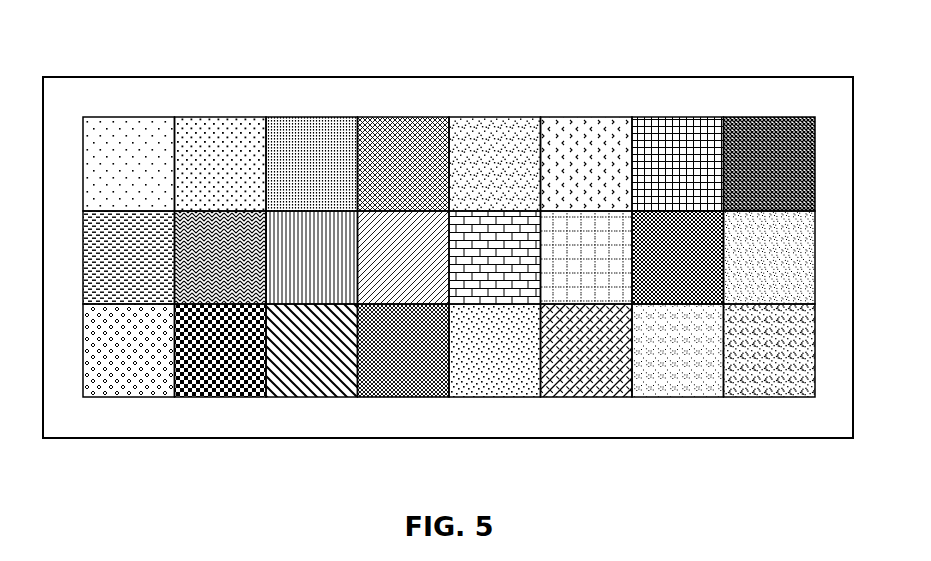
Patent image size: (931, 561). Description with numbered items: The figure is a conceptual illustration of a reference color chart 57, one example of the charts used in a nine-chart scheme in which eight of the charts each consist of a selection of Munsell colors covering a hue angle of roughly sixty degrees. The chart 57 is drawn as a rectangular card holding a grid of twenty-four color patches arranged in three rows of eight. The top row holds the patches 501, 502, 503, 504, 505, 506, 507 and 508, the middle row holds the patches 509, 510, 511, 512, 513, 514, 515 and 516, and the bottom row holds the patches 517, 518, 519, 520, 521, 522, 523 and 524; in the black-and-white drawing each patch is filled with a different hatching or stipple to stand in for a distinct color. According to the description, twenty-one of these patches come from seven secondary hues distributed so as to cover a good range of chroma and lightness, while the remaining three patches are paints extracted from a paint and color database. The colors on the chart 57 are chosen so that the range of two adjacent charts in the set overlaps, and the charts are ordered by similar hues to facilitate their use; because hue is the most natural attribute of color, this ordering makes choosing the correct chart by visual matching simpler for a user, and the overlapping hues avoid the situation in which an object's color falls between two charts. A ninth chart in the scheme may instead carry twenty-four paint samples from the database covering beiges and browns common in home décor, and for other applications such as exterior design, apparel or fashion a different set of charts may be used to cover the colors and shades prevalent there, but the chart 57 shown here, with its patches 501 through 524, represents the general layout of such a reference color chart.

The reference color chart 57 is at (203, 77).
The patch 501 is at (150, 176).
The patch 502 is at (199, 176).
The patch 503 is at (333, 176).
The patch 504 is at (382, 176).
The patch 505 is at (516, 176).
The patch 506 is at (565, 176).
The patch 507 is at (699, 176).
The patch 508 is at (748, 176).
The patch 509 is at (150, 269).
The patch 510 is at (199, 269).
The patch 511 is at (333, 269).
The patch 512 is at (382, 269).
The patch 513 is at (516, 269).
The patch 514 is at (565, 269).
The patch 515 is at (699, 269).
The patch 516 is at (748, 269).
The patch 517 is at (150, 362).
The patch 518 is at (199, 362).
The patch 519 is at (333, 362).
The patch 520 is at (382, 362).
The patch 521 is at (516, 362).
The patch 522 is at (565, 362).
The patch 523 is at (699, 362).
The patch 524 is at (748, 362).